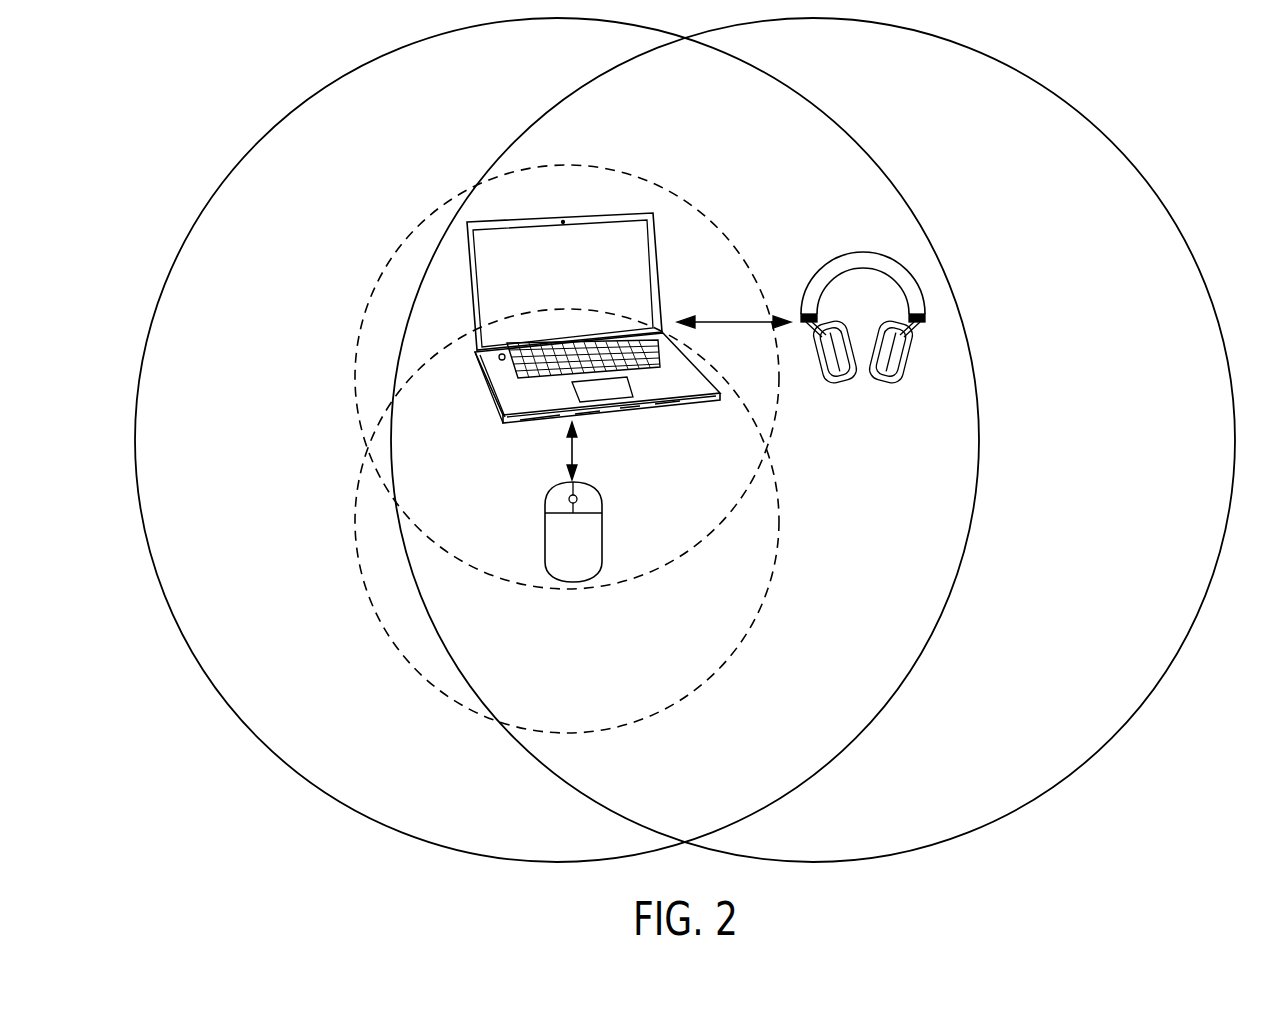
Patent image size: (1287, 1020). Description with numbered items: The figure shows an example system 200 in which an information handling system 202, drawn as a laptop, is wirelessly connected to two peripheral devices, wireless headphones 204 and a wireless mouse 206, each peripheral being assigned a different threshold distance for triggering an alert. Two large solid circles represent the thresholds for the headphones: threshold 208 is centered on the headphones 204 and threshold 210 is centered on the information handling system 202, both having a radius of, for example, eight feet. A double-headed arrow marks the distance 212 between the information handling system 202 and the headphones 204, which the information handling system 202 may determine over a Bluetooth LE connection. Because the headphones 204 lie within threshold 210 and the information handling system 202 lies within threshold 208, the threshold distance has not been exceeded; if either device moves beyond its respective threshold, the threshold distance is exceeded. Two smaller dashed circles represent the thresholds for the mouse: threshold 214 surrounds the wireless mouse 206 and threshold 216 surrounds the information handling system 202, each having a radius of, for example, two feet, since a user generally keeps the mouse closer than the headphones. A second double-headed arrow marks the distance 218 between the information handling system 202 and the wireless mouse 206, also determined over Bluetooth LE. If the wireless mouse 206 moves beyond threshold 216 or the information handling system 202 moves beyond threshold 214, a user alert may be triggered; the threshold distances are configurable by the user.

The system 200 is at (158, 128).
The information handling system 202 is at (493, 398).
The wireless headphones 204 is at (862, 250).
The wireless mouse 206 is at (600, 527).
The threshold 208 is at (1083, 110).
The threshold 210 is at (290, 114).
The distance 212 is at (733, 320).
The threshold 214 is at (353, 540).
The threshold 216 is at (353, 378).
The distance 218 is at (567, 450).